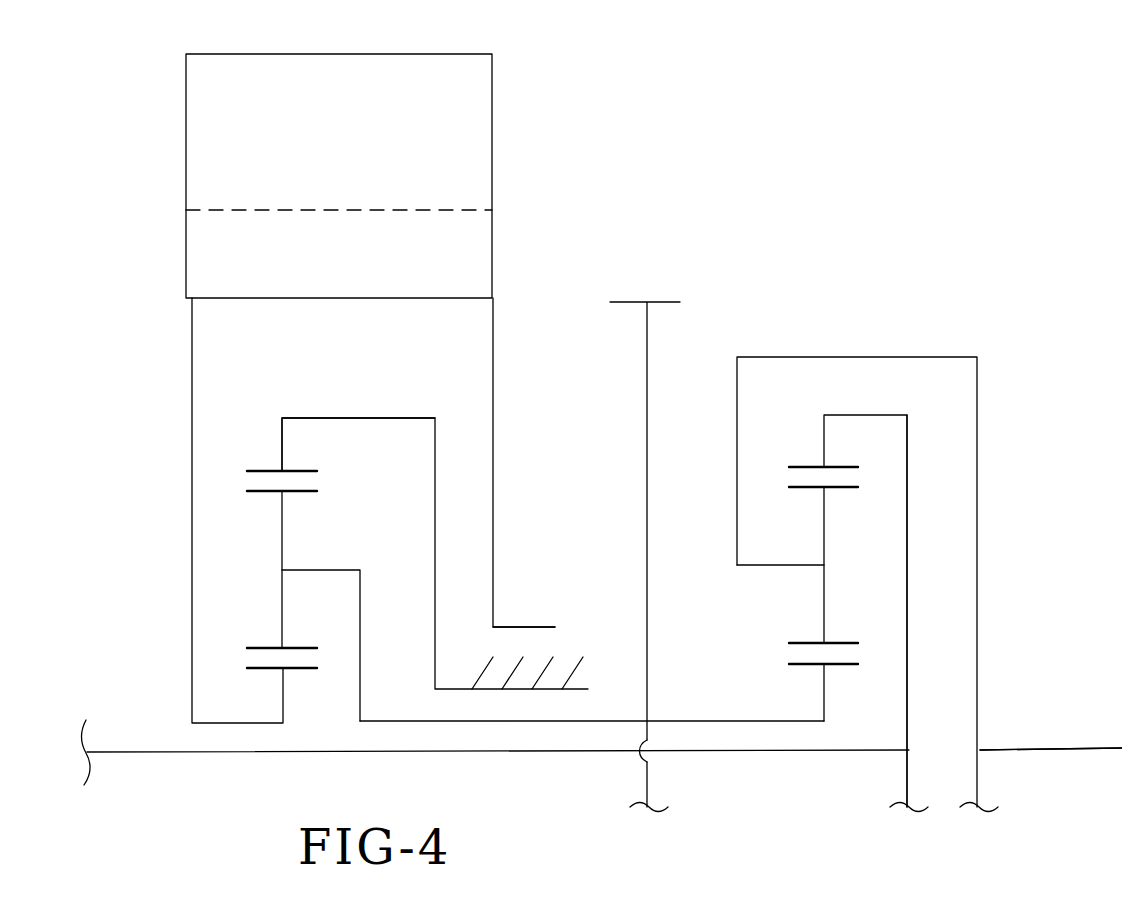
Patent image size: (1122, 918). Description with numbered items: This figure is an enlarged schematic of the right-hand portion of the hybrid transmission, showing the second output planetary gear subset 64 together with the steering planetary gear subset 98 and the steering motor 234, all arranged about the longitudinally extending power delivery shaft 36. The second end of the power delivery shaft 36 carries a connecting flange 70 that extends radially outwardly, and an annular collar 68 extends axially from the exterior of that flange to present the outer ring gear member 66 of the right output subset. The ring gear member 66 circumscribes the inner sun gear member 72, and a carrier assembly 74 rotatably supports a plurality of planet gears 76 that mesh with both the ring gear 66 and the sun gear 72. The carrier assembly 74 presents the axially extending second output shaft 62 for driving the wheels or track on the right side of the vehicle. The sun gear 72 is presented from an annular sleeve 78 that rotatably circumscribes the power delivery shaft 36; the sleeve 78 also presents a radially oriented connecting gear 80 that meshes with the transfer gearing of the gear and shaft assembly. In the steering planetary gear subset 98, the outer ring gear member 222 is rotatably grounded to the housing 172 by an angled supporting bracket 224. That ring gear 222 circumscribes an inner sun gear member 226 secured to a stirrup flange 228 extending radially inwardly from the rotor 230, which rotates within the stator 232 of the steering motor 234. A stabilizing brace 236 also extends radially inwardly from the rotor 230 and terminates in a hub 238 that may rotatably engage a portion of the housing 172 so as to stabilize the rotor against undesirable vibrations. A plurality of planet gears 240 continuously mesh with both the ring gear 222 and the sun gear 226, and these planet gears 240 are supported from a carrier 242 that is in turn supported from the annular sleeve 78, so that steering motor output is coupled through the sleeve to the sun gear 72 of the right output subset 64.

The power delivery shaft 36 is at (152, 754).
The second output shaft 62 is at (1059, 748).
The second output planetary gear subset 64 is at (808, 357).
The outer gear member 66 is at (812, 466).
The annular collar 68 is at (860, 414).
The connecting flange 70 is at (910, 620).
The inner gear member 72 is at (808, 667).
The carrier assembly 74 is at (760, 565).
The planet gears 76 is at (825, 534).
The annular sleeve 78 is at (693, 720).
The connecting gear 80 is at (645, 375).
The steering planetary gear subset 98 is at (291, 418).
The housing 172 is at (562, 667).
The outer ring gear member 222 is at (300, 470).
The angled supporting bracket 224 is at (407, 418).
The inner sun gear member 226 is at (273, 672).
The stirrup flange 228 is at (191, 590).
The rotor 230 is at (314, 272).
The stator 232 is at (314, 151).
The steering motor 234 is at (493, 92).
The stabilizing brace 236 is at (495, 490).
The hub 238 is at (530, 627).
The planet gears 240 is at (281, 545).
The carrier 242 is at (362, 566).